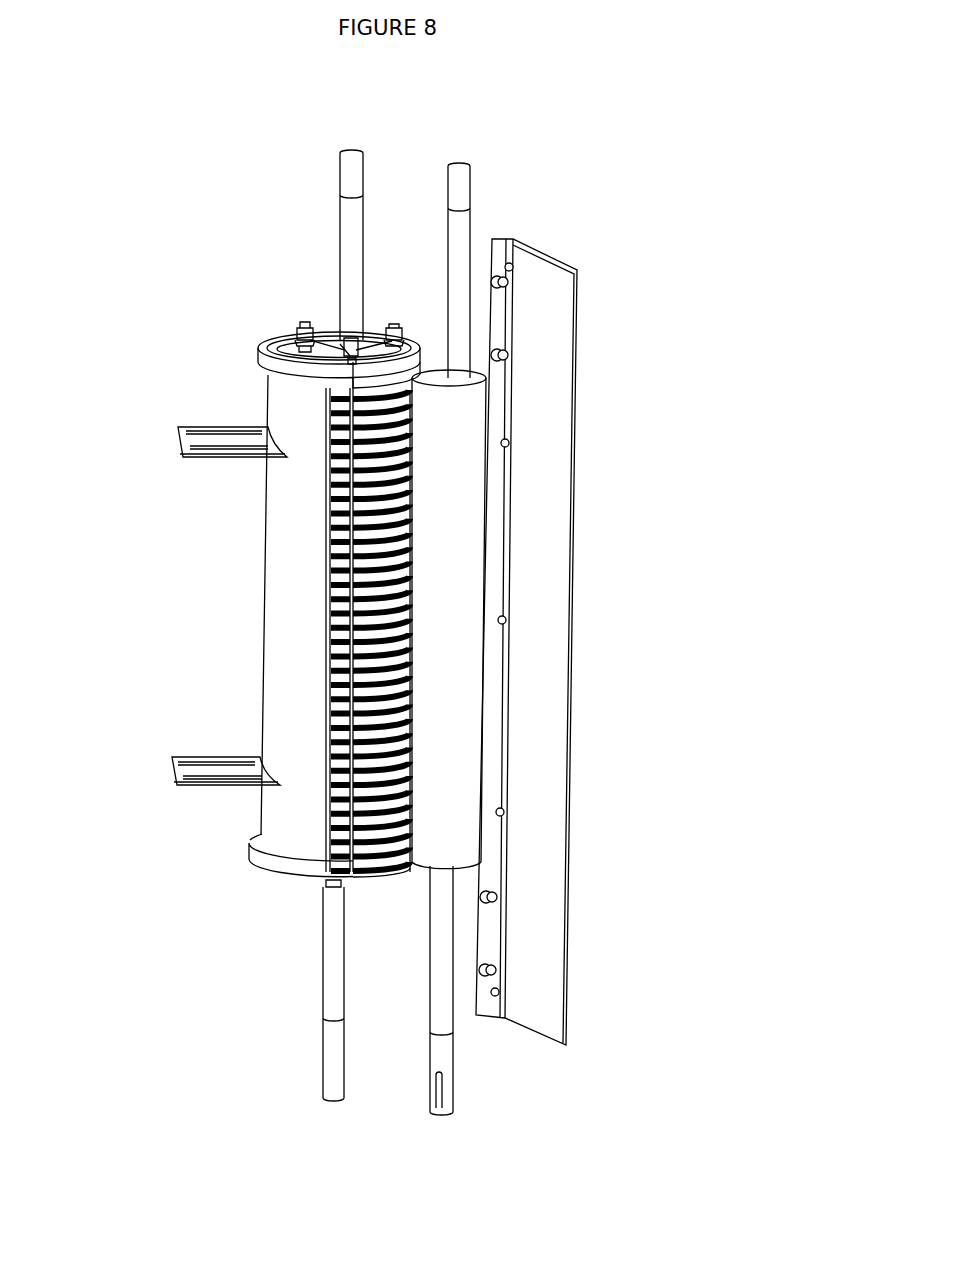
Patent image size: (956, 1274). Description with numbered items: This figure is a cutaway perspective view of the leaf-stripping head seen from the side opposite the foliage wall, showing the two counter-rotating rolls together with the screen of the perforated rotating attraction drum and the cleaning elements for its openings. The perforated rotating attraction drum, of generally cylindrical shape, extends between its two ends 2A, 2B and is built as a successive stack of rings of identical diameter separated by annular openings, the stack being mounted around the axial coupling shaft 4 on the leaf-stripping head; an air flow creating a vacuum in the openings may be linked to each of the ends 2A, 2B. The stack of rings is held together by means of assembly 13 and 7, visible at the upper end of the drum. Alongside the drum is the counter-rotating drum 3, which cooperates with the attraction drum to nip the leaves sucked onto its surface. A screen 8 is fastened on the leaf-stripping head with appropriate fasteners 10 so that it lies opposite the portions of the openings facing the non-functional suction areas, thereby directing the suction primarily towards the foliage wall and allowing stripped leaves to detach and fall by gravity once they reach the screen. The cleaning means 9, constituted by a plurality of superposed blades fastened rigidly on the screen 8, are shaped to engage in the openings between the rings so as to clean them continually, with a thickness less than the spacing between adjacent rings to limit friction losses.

The end of the perforated rotating attraction drum 2A is at (385, 305).
The end of the perforated rotating attraction drum 2B is at (375, 892).
The counter-rotating drum 3 is at (453, 664).
The shaft 4 is at (333, 972).
The means of assembly 7 is at (285, 332).
The screen 8 is at (278, 586).
The cleaning means 9 is at (327, 810).
The fasteners 10 is at (195, 438).
The means of assembly 13 is at (300, 320).